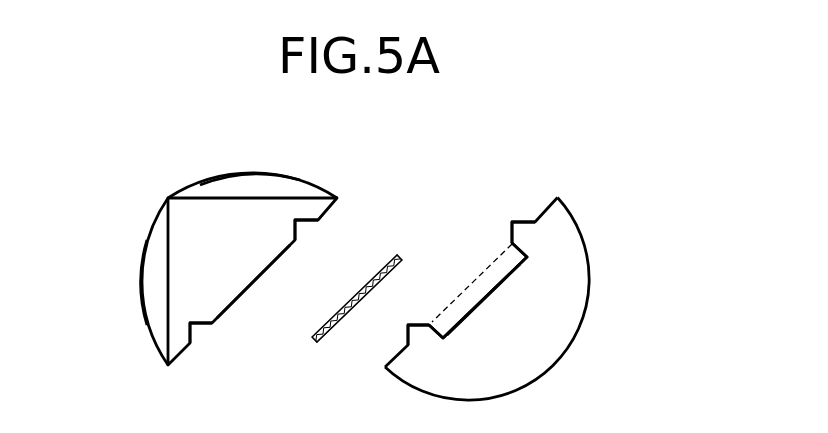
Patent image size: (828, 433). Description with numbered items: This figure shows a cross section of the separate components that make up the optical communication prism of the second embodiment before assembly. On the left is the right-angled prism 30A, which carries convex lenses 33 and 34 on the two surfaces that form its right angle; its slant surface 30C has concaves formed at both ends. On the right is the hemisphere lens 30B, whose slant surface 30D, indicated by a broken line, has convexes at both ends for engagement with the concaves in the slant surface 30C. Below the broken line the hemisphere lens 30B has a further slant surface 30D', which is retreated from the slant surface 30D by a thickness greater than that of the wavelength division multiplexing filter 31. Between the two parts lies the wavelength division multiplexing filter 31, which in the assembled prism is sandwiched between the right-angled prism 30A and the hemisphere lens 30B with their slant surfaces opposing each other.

The right-angled prism 30A is at (273, 220).
The hemisphere lens 30B is at (507, 357).
The slant surface 30C is at (257, 282).
The slant surface 30D is at (556, 290).
The slant surface 30D' is at (555, 299).
The wavelength division multiplexing filter 31 is at (397, 255).
The convex lens 33 is at (153, 282).
The convex lens 34 is at (253, 183).